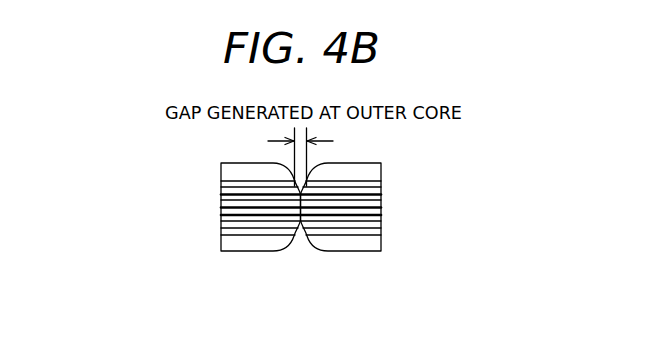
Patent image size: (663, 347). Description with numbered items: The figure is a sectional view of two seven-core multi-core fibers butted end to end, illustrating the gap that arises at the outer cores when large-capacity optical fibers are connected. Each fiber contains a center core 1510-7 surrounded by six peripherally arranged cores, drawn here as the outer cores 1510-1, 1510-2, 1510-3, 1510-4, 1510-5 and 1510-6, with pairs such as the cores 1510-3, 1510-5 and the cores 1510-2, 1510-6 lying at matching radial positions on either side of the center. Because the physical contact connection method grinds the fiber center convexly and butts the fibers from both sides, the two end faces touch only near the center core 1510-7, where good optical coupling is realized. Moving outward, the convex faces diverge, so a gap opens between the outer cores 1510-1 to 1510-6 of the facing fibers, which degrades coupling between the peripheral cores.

The peripheral core 1510-1 is at (225, 235).
The peripheral core 1510-2 is at (225, 221).
The peripheral core 1510-3 is at (225, 192).
The peripheral core 1510-4 is at (225, 174).
The peripheral core 1510-5 is at (254, 200).
The peripheral core 1510-6 is at (254, 247).
The center core 1510-7 is at (225, 206).